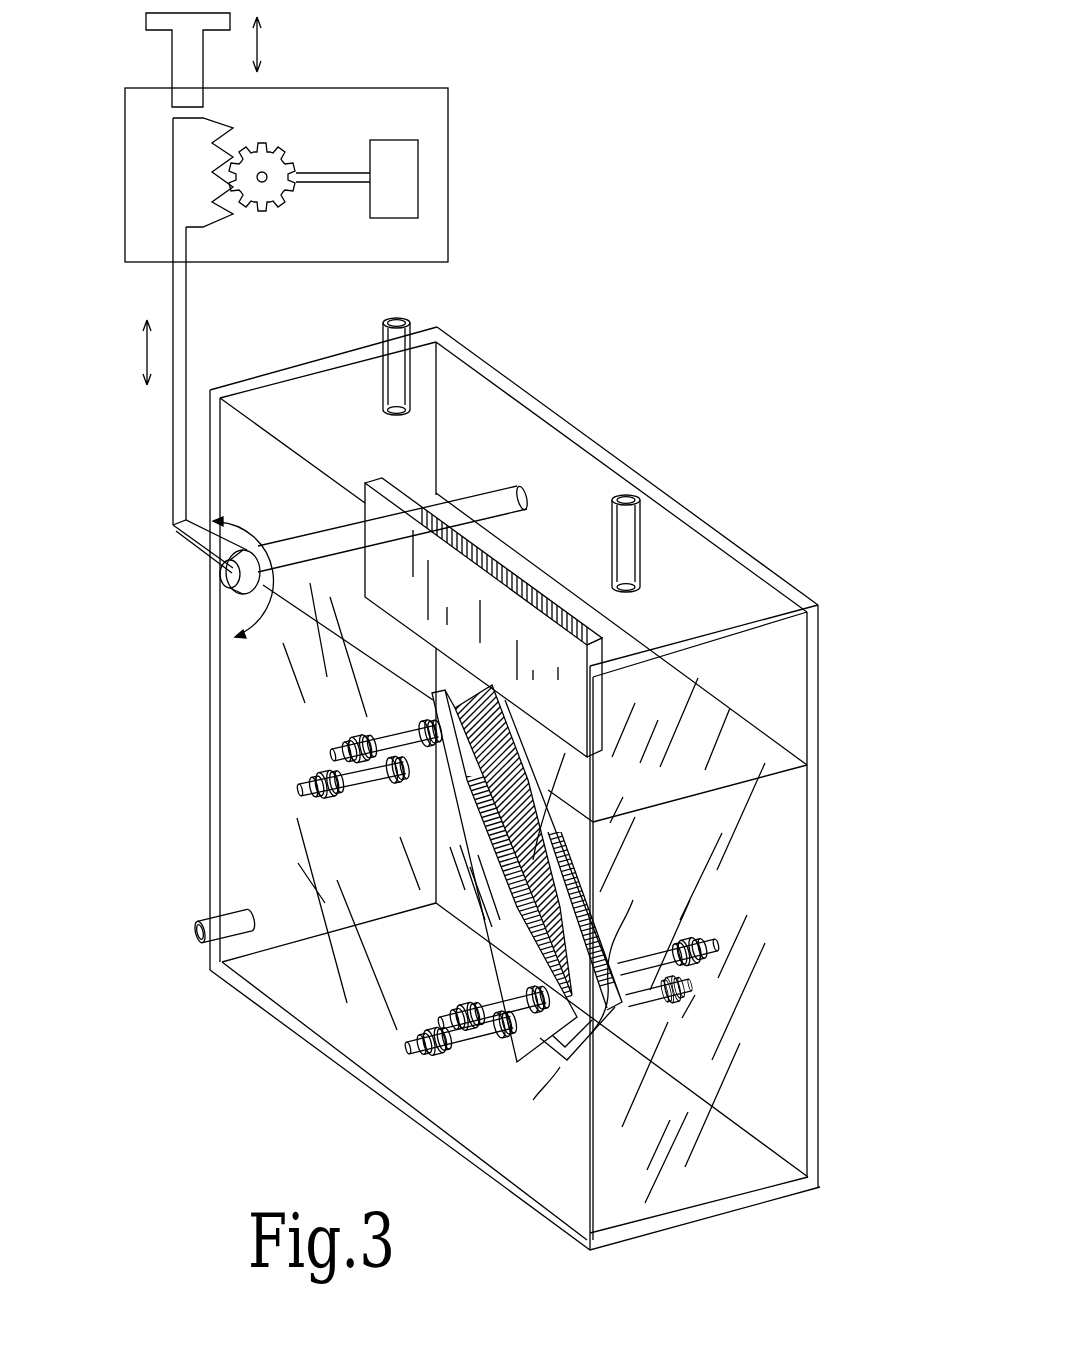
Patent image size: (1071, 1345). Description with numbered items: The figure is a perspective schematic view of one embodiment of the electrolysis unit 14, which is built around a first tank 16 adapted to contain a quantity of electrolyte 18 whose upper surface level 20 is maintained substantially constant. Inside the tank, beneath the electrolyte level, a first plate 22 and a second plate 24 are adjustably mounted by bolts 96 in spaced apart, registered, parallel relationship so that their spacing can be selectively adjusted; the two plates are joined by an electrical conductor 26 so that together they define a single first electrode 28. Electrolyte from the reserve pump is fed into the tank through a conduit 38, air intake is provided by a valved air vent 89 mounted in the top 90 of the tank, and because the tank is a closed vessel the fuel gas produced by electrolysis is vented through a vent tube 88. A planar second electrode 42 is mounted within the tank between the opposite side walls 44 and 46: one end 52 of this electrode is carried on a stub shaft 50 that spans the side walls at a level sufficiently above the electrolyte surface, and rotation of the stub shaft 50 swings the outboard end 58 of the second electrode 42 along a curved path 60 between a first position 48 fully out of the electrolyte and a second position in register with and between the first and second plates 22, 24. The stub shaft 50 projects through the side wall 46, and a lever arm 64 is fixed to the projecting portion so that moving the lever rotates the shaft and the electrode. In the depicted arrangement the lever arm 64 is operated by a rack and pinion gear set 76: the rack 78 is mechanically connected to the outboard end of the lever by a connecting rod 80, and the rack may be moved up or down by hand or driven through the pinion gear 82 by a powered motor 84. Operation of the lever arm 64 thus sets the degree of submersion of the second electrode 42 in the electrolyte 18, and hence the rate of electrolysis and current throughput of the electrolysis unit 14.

The electrolysis unit 14 is at (523, 759).
The first tank 16 is at (818, 683).
The electrolyte 18 is at (723, 790).
The upper surface level of the electrolyte 20 is at (753, 747).
The first plate 22 is at (467, 958).
The second plate 24 is at (617, 953).
The electrical conductor 26 is at (610, 1010).
The first electrode 28 is at (369, 774).
The conduit 38 is at (200, 920).
The second electrode 42 is at (515, 587).
The side wall 44 is at (510, 403).
The side wall 46 is at (233, 445).
The first position 48 is at (537, 587).
The stub shaft 50 is at (298, 552).
The end of the second electrode 52 is at (375, 503).
The outboard end of the second electrode 58 is at (597, 698).
The curved path 60 is at (590, 782).
The lever arm 64 is at (192, 543).
The rack and pinion gear set 76 is at (108, 101).
The rack 78 is at (188, 193).
The connecting rod 80 is at (173, 288).
The pinion gear 82 is at (264, 172).
The powered motor 84 is at (418, 158).
The vent tube 88 is at (617, 530).
The valved air vent 89 is at (383, 338).
The top of the first tank 90 is at (562, 470).
The bolts 96 is at (487, 1050).